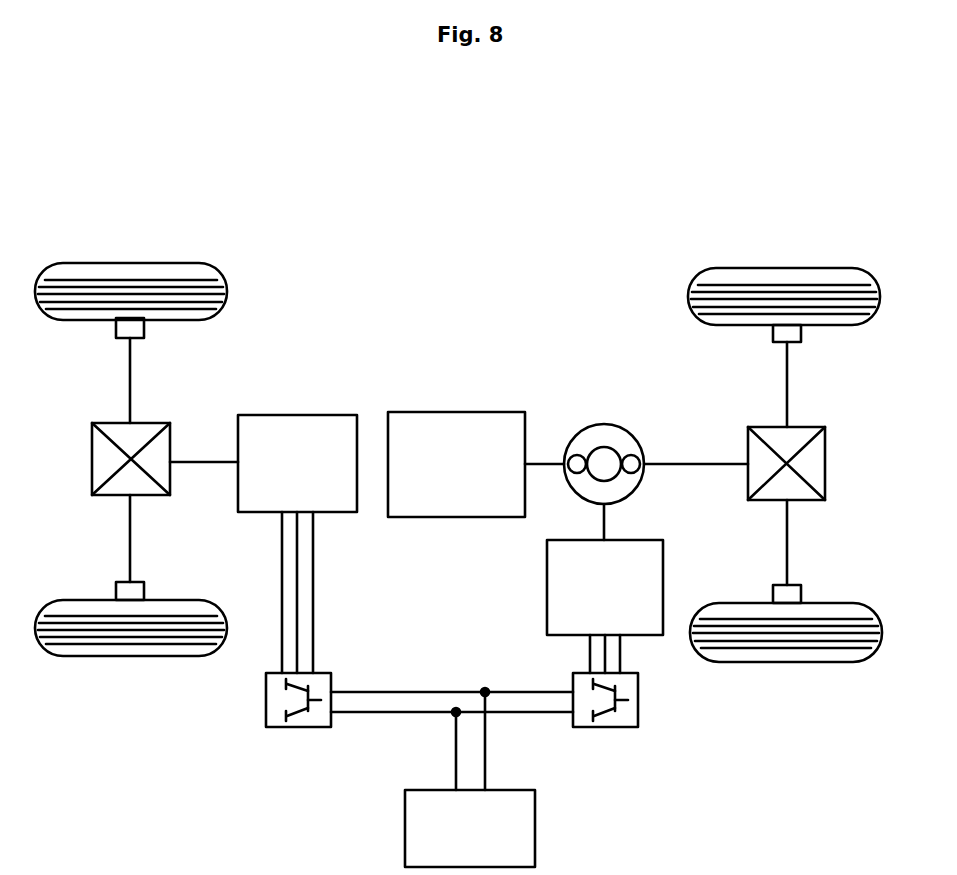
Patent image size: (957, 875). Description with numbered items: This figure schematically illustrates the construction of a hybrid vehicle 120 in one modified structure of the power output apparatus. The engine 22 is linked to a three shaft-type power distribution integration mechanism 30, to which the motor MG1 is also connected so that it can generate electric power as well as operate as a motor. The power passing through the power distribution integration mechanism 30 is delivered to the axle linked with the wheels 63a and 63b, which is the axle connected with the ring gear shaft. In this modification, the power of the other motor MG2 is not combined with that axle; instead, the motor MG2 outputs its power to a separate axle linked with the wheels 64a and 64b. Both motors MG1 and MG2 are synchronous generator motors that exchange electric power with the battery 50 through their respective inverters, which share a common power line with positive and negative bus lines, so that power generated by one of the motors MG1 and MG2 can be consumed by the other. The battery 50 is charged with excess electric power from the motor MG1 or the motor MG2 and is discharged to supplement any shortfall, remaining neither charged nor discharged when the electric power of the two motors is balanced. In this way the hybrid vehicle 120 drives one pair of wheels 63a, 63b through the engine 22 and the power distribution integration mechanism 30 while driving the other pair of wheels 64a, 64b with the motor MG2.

The hybrid vehicle 120 is at (489, 242).
The engine 22 is at (457, 412).
The power distribution integration mechanism 30 is at (605, 424).
The battery 50 is at (535, 828).
The wheel 63a is at (787, 268).
The wheel 63b is at (788, 663).
The wheel 64a is at (130, 262).
The wheel 64b is at (130, 656).
The motor MG1 is at (546, 587).
The motor MG2 is at (295, 415).